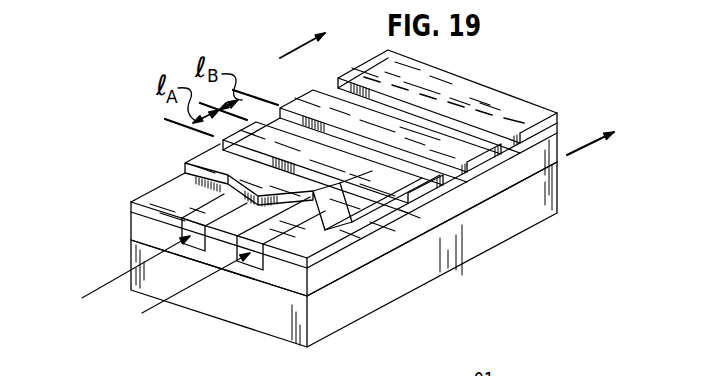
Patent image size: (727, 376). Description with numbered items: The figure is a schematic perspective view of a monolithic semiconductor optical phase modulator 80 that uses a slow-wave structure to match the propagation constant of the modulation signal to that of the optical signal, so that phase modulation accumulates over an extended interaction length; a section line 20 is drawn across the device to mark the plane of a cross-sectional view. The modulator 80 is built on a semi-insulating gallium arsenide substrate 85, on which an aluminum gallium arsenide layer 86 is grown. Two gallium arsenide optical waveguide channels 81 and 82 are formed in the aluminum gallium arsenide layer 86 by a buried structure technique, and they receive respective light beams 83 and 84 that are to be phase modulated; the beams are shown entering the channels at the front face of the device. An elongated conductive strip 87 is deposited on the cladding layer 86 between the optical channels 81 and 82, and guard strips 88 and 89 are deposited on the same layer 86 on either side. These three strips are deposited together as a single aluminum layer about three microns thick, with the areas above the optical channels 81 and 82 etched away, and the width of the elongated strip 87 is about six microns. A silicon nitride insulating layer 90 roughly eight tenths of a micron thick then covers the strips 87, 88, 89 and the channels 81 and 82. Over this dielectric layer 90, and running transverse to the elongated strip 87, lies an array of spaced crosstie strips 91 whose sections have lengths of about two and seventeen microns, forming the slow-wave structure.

The section line 20- 20 is at (466, 88).
The optical phase modulator 80 is at (346, 193).
The optical waveguide channel 81 is at (187, 232).
The optical waveguide channel 82 is at (250, 262).
The light beam 83 is at (113, 286).
The light beam 84 is at (165, 310).
The semi-insulating gallium arsenide substrate 85 is at (534, 203).
The aluminum gallium arsenide layer 86 is at (534, 158).
The elongated conductive strip 87 is at (178, 197).
The guard strip 88 is at (150, 198).
The guard strip 89 is at (325, 232).
The silicon nitride insulating layer 90 is at (213, 158).
The crosstie strips 91 is at (420, 180).